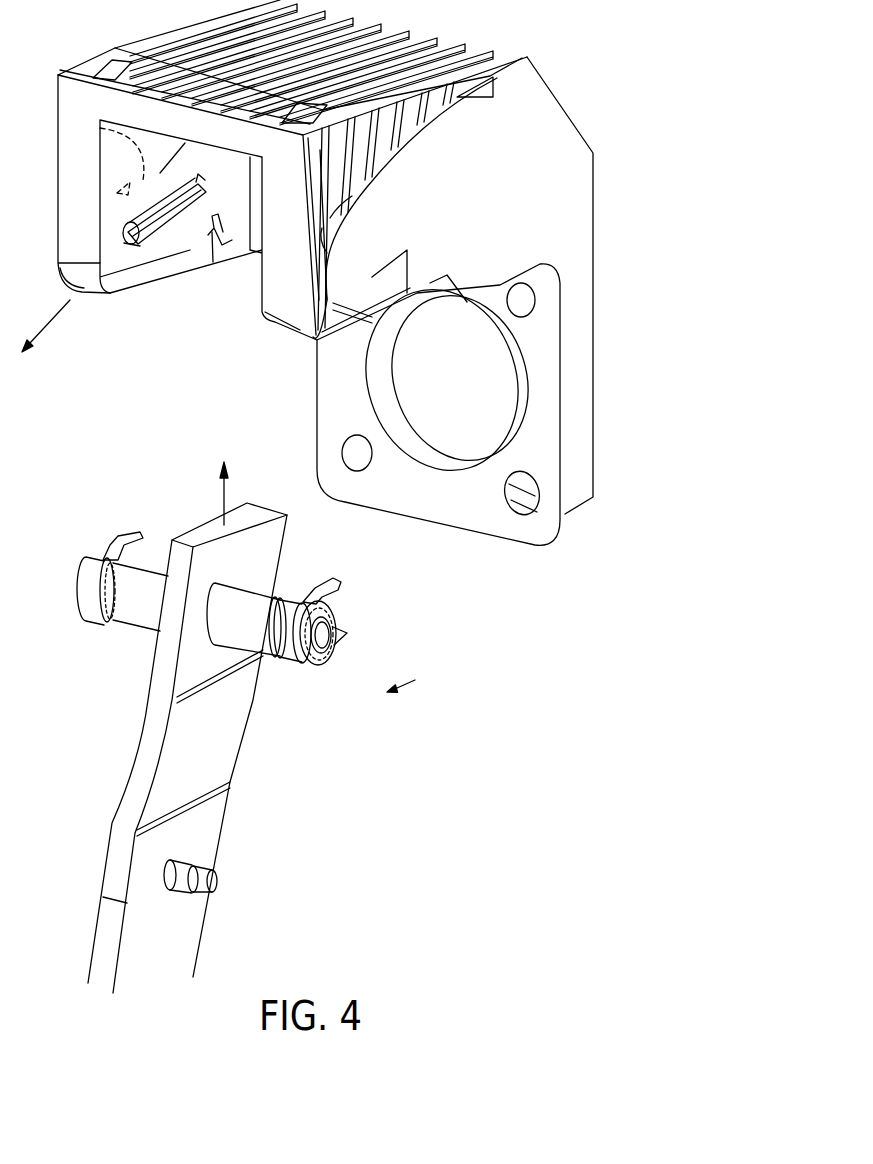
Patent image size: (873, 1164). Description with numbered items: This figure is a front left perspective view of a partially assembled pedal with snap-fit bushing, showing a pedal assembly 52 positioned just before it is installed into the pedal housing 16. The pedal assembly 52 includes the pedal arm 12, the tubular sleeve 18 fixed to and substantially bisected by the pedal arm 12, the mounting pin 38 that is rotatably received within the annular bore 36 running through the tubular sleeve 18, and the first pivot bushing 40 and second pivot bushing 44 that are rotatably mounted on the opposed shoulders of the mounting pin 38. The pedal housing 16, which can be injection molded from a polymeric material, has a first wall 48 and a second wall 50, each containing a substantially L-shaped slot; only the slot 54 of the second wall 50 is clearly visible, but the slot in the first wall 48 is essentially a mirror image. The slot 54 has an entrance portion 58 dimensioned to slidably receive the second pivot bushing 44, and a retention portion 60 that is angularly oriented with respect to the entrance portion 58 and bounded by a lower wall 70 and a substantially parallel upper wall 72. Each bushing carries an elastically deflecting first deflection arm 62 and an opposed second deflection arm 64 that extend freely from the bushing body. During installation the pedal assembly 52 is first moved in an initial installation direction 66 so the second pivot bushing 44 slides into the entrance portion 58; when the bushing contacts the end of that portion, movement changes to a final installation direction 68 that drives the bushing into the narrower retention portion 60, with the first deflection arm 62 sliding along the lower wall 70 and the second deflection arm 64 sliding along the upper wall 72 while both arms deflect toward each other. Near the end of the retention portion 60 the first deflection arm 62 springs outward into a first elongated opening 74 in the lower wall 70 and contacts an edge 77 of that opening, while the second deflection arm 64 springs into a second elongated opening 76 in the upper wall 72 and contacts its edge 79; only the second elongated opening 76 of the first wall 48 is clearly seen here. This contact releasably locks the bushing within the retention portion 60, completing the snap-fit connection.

The pedal arm 12 is at (185, 918).
The pedal housing 16 is at (545, 110).
The tubular sleeve 18 is at (138, 617).
The annular bore 36 is at (276, 658).
The mounting pin 38 is at (330, 625).
The first pivot bushing 40 is at (292, 663).
The second pivot bushing 44 is at (93, 612).
The first wall 48 is at (283, 310).
The second wall 50 is at (75, 280).
The pedal assembly 52 is at (415, 680).
The slot 54 is at (215, 235).
The entrance portion 58 is at (214, 240).
The retention portion 60 is at (128, 228).
The first deflection arm 62 is at (348, 640).
The second deflection arm 64 is at (335, 583).
The initial installation direction 66 is at (222, 492).
The final installation direction 68 is at (46, 325).
The lower wall 70 is at (127, 240).
The upper wall 72 is at (187, 207).
The first elongated opening 74 is at (140, 215).
The second elongated opening 76 is at (118, 190).
The edge 77 is at (133, 180).
The edge 79 is at (100, 128).